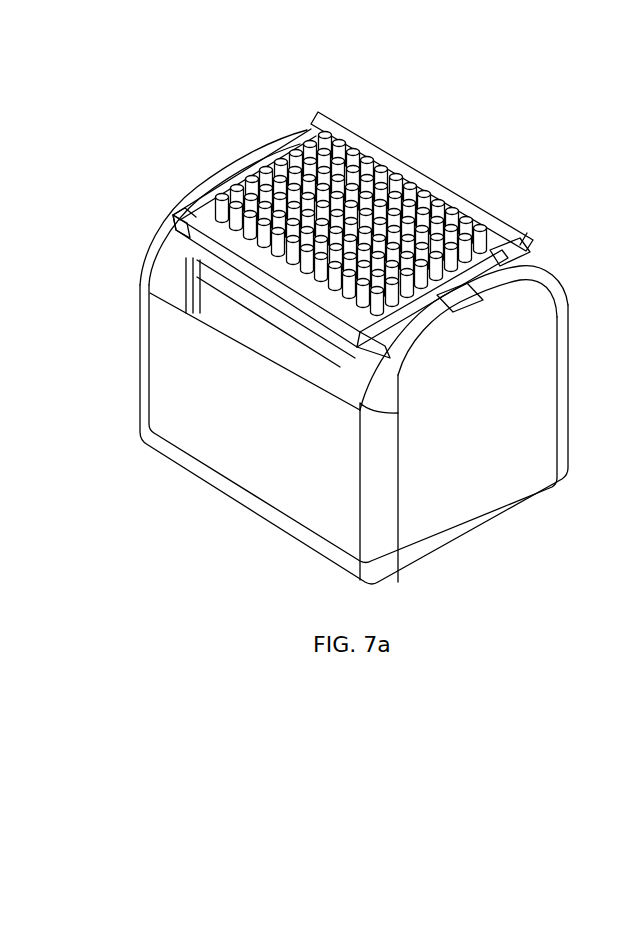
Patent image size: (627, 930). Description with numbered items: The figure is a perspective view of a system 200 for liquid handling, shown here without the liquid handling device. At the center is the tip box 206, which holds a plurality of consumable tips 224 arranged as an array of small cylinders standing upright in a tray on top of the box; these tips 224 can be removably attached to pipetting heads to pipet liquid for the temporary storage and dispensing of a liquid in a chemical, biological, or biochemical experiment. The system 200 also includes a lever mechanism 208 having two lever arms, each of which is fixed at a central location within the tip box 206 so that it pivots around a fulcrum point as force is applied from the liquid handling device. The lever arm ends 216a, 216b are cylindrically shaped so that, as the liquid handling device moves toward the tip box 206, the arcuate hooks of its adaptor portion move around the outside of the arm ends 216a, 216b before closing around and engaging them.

The system 200 is at (304, 339).
The tip box 206 is at (272, 477).
The lever mechanism 208 is at (292, 318).
The lever arm end 216a is at (207, 234).
The lever arm end 216b is at (448, 186).
The consumable tips 224 is at (293, 182).